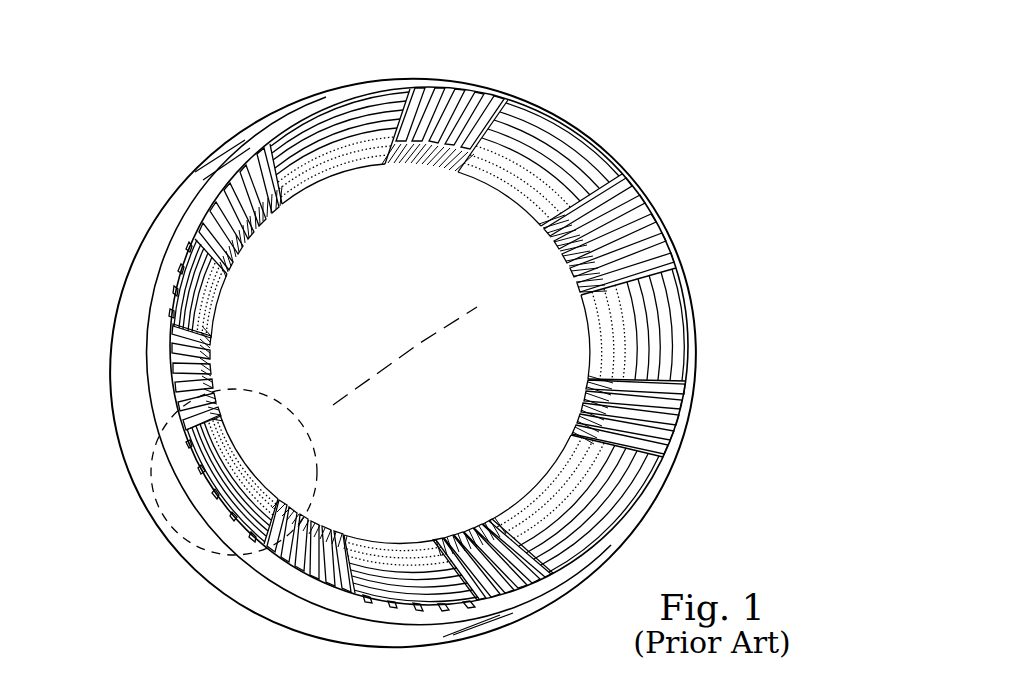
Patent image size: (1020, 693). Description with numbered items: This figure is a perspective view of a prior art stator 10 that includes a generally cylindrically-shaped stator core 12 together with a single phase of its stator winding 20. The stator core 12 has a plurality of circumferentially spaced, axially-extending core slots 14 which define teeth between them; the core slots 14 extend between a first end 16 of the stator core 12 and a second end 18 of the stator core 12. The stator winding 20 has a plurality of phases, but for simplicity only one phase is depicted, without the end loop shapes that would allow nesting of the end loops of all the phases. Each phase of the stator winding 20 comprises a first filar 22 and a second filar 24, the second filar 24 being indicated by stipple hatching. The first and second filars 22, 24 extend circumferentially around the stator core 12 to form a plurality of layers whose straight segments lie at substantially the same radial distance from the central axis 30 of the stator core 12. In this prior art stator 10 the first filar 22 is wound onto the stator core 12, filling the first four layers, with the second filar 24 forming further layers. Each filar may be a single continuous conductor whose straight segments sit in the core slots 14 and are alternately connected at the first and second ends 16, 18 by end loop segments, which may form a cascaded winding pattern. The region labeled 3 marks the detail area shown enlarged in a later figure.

The stator 10 is at (272, 58).
The stator core 12 is at (614, 180).
The core slots 14 is at (632, 200).
The first end 16 is at (448, 92).
The second end 18 is at (125, 452).
The stator winding 20 is at (566, 130).
The first filar 22 is at (291, 135).
The second filar 24 is at (372, 128).
The central axis 30 is at (432, 347).
The detail region of FIG. 3 is at (202, 560).